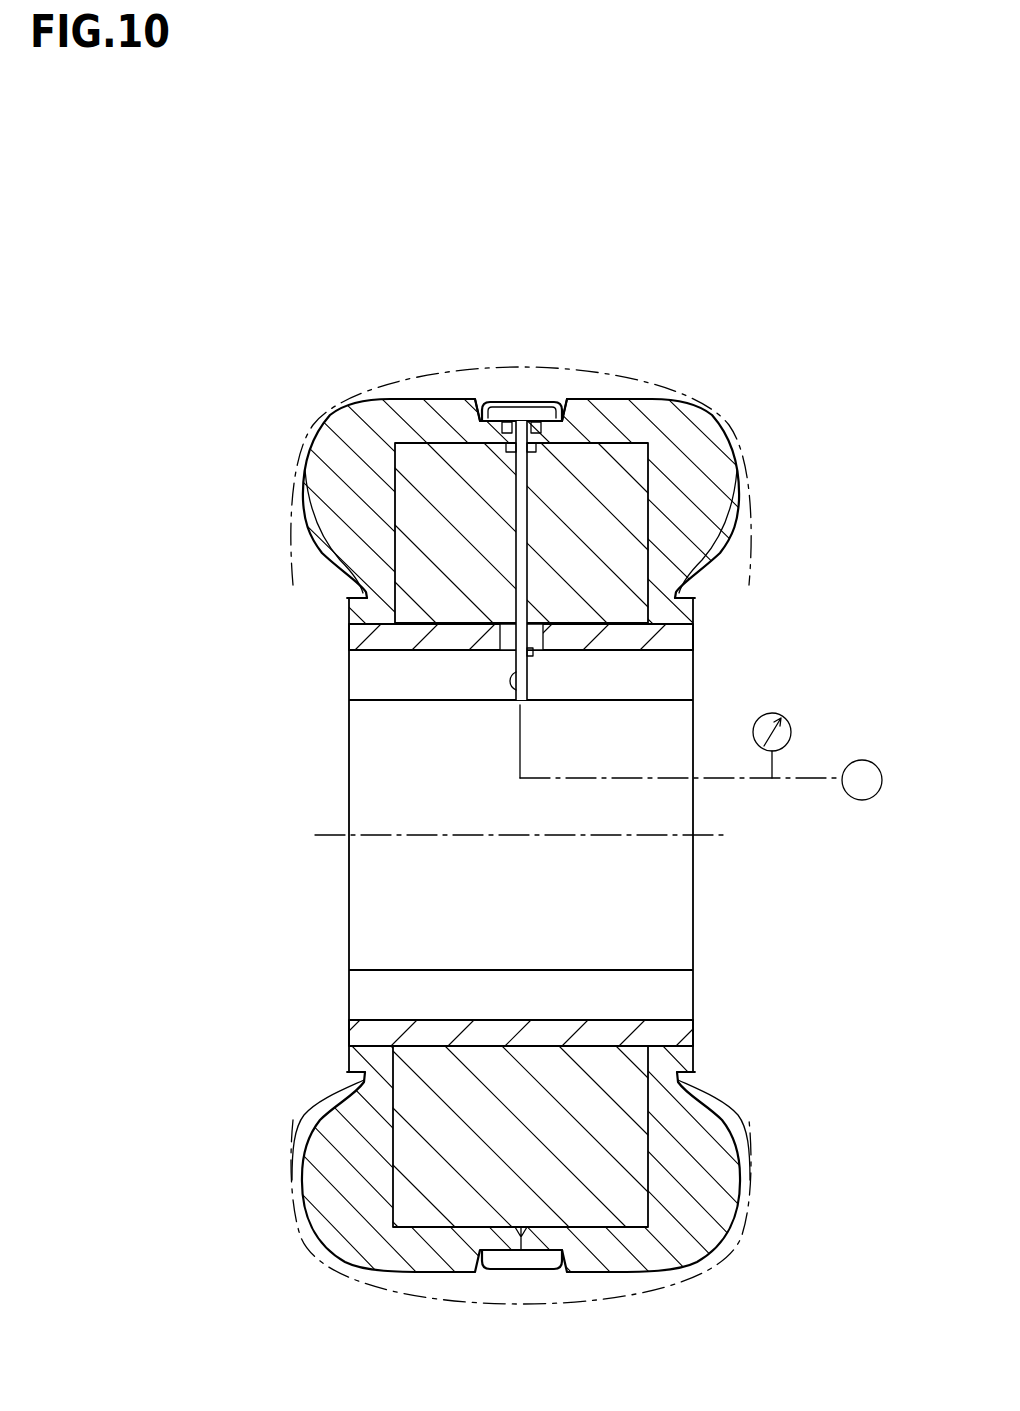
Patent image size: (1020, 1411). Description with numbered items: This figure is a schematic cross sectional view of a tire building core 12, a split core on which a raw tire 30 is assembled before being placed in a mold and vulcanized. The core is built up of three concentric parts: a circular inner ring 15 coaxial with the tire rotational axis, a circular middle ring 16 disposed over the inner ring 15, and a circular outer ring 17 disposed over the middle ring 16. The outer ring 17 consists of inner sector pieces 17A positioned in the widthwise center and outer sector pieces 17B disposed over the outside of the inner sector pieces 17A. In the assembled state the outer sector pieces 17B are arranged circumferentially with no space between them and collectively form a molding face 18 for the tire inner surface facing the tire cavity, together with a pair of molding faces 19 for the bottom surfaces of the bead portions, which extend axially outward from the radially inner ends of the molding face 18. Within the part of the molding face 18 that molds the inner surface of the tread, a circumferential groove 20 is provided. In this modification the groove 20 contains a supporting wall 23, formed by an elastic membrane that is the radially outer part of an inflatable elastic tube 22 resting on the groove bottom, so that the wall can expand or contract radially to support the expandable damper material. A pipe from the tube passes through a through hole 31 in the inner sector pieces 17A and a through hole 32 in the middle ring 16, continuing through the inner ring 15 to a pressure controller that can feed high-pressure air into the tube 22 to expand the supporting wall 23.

The tire building core 12 is at (782, 443).
The inner ring 15 is at (336, 682).
The middle ring 16 is at (339, 636).
The outer ring 17 is at (278, 429).
The inner sector pieces 17A is at (425, 470).
The outer sector pieces 17B is at (347, 438).
The molding face 18 is at (652, 382).
The molding faces 19 is at (345, 600).
The circumferential groove 20 is at (557, 383).
The inflatable elastic tube 22 is at (513, 402).
The supporting wall 23 is at (537, 388).
The raw tire 30 is at (752, 1150).
The through hole 31 is at (524, 510).
The through hole 32 is at (528, 650).